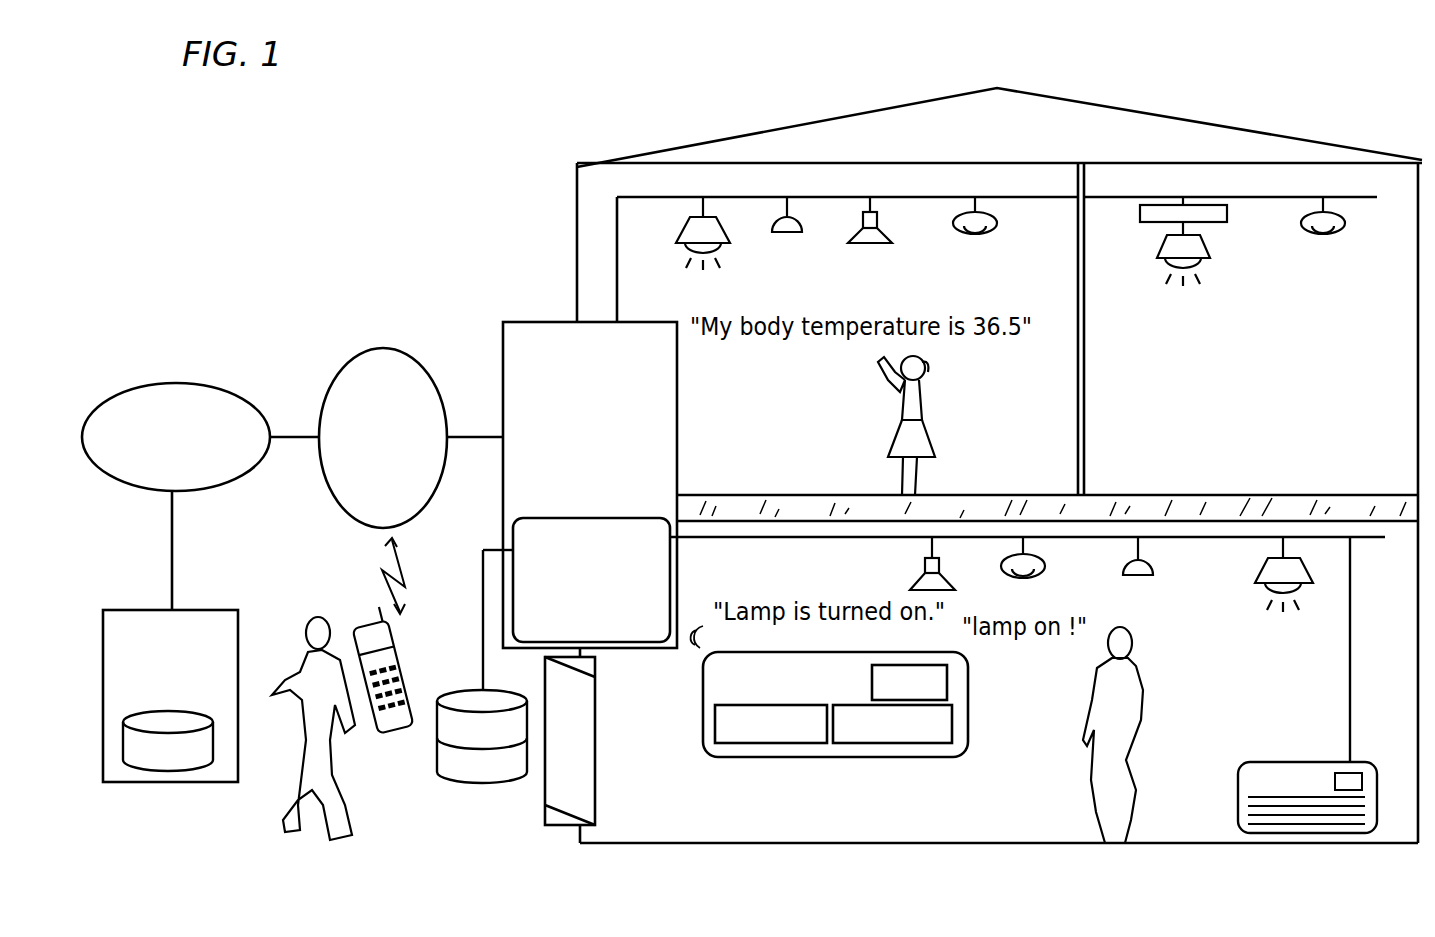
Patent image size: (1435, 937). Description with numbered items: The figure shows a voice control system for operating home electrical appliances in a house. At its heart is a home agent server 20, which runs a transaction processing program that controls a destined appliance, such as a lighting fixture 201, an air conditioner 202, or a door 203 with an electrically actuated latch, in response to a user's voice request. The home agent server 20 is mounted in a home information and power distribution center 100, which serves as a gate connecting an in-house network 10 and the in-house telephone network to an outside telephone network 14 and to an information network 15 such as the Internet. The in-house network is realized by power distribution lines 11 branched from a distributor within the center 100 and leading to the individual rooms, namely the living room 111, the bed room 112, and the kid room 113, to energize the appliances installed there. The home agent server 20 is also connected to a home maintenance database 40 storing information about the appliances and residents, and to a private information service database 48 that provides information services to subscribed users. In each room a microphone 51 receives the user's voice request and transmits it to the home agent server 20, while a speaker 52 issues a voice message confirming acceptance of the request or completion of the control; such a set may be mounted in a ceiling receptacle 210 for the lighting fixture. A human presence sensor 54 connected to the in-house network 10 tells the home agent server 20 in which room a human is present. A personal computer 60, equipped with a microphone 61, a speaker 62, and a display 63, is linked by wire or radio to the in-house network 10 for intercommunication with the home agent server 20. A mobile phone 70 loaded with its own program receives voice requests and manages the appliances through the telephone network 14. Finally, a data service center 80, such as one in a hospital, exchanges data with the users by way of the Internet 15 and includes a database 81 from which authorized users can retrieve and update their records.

The in-house network 10 is at (1368, 200).
The power distribution lines 11 is at (1105, 197).
The telephone network 14 is at (383, 438).
The information network 15 is at (200, 496).
The home agent server 20 is at (591, 580).
The home maintenance database 40 is at (482, 666).
The private information service database 48 is at (468, 768).
The microphone 51 is at (807, 222).
The speaker 52 is at (893, 223).
The human presence sensor 54 is at (1000, 222).
The personal computer 60 is at (703, 700).
The microphone 61 is at (950, 672).
The speaker 62 is at (952, 718).
The display 63 is at (734, 744).
The mobile phone 70 is at (367, 630).
The data service center 80 is at (170, 696).
The database 81 is at (168, 741).
The home information and power distribution center 100 is at (562, 485).
The living room 111 is at (886, 735).
The bed room 112 is at (1186, 451).
The kid room 113 is at (968, 425).
The lighting fixture 201 is at (716, 264).
The air conditioner 202 is at (1307, 685).
The door 203 is at (570, 741).
The ceiling receptacle 210 is at (1230, 212).